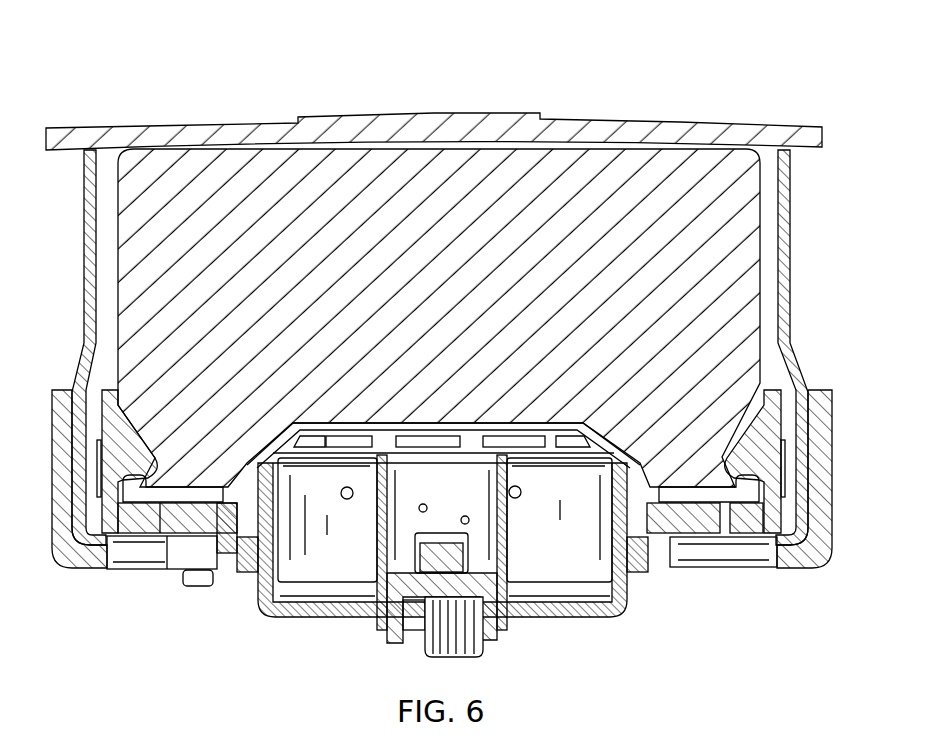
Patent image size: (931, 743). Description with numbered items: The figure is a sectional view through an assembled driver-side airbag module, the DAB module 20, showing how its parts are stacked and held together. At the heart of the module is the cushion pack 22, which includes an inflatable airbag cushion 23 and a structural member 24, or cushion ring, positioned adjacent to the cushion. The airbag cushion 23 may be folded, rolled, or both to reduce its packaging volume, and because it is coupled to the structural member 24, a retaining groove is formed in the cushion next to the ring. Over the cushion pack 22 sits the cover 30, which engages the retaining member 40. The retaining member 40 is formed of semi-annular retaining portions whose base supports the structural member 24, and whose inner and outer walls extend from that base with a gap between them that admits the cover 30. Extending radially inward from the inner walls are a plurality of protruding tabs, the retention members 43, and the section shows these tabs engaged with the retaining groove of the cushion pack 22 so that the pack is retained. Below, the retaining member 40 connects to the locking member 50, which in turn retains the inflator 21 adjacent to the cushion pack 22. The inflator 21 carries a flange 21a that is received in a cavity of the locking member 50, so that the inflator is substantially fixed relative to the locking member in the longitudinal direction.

The DAB module 20 is at (131, 58).
The inflator 21 is at (296, 632).
The flange 21a is at (228, 586).
The cushion pack 22 is at (108, 214).
The inflatable airbag cushion 23 is at (438, 165).
The structural member 24 is at (462, 423).
The cover 30 is at (665, 123).
The retaining member 40 is at (53, 525).
The retention member 43 is at (138, 443).
The locking member 50 is at (645, 572).